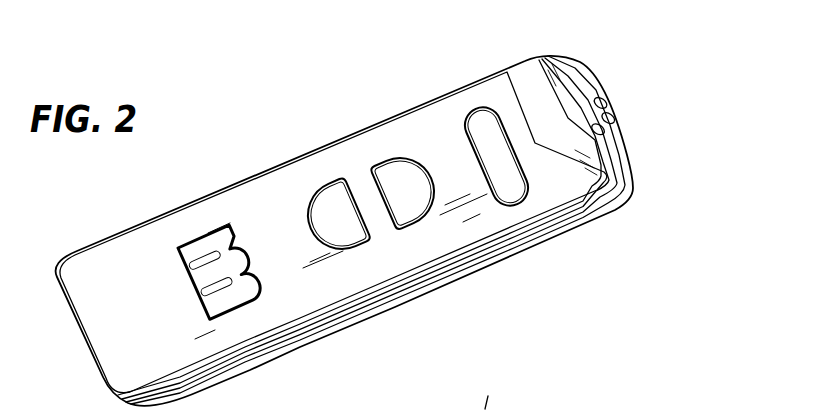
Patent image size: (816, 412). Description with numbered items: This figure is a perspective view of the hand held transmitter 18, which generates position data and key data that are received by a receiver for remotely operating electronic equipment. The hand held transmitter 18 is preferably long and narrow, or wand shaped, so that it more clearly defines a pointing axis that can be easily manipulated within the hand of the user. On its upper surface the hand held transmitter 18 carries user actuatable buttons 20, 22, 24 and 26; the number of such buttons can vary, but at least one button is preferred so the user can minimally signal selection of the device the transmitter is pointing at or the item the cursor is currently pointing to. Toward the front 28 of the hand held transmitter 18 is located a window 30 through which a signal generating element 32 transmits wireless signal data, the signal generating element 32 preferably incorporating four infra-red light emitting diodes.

The hand held transmitter 18 is at (290, 190).
The user actuatable button 20 is at (513, 199).
The user actuatable button 22 is at (407, 213).
The user actuatable button 24 is at (365, 233).
The user actuatable button 26 is at (237, 293).
The front 28 is at (657, 182).
The window 30 is at (597, 86).
The signal generating element 32 is at (620, 133).